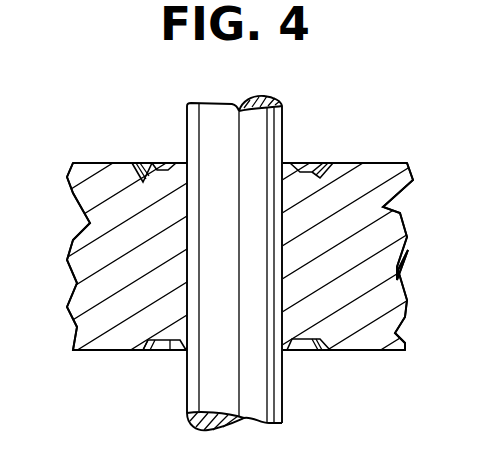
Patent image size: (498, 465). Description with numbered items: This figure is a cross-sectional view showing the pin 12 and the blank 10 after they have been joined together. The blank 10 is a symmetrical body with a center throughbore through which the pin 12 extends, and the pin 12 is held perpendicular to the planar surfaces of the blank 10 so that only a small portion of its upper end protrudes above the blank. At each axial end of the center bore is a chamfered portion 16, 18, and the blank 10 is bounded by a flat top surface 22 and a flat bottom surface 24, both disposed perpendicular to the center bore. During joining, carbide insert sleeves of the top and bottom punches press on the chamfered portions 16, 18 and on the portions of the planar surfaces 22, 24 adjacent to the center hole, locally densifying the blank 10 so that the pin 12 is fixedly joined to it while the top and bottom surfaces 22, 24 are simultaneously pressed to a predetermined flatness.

The blank 10 is at (343, 164).
The pin 12 is at (284, 398).
The chamfered portion 16 is at (153, 351).
The chamfered portion 18 is at (143, 168).
The top surface 22 is at (80, 162).
The bottom surface 24 is at (381, 350).